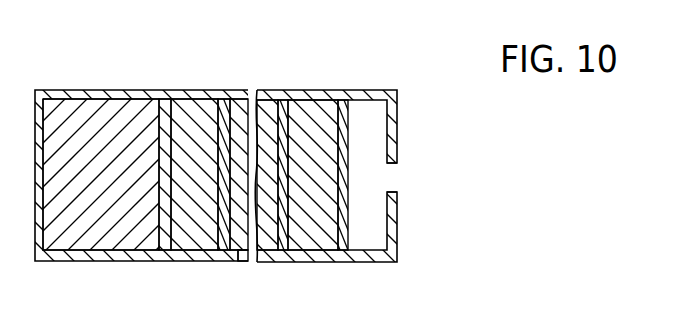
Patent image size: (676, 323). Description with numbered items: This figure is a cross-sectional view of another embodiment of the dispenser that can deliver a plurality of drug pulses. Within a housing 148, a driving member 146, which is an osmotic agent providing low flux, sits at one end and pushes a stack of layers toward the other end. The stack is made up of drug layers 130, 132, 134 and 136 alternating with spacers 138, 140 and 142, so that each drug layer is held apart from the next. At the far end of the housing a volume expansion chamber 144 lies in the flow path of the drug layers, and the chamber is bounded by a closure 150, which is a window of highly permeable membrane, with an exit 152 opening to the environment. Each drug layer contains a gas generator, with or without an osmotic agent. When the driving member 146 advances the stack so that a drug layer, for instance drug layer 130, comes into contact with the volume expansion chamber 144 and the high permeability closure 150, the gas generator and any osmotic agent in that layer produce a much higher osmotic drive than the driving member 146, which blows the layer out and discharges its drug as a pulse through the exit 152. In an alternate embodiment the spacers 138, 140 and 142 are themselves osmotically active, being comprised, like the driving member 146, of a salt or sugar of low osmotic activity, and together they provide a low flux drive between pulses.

The drug layer 130 is at (344, 90).
The drug layer 132 is at (286, 90).
The drug layer 134 is at (229, 90).
The drug layer 136 is at (165, 90).
The spacer 138 is at (323, 262).
The spacer 140 is at (232, 246).
The spacer 142 is at (205, 261).
The volume expansion chamber 144 is at (397, 137).
The driving member 146 is at (98, 90).
The casing 148 is at (113, 261).
The closure 150 is at (397, 235).
The exit 152 is at (392, 192).